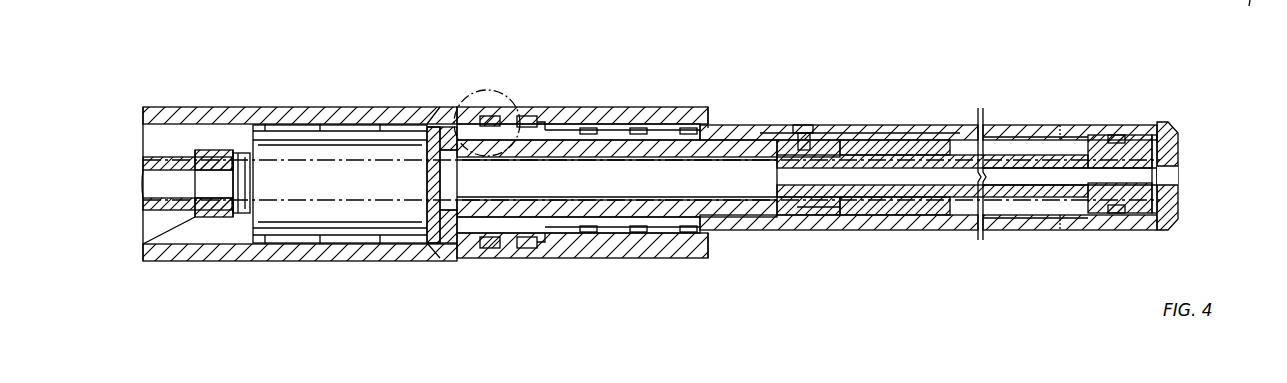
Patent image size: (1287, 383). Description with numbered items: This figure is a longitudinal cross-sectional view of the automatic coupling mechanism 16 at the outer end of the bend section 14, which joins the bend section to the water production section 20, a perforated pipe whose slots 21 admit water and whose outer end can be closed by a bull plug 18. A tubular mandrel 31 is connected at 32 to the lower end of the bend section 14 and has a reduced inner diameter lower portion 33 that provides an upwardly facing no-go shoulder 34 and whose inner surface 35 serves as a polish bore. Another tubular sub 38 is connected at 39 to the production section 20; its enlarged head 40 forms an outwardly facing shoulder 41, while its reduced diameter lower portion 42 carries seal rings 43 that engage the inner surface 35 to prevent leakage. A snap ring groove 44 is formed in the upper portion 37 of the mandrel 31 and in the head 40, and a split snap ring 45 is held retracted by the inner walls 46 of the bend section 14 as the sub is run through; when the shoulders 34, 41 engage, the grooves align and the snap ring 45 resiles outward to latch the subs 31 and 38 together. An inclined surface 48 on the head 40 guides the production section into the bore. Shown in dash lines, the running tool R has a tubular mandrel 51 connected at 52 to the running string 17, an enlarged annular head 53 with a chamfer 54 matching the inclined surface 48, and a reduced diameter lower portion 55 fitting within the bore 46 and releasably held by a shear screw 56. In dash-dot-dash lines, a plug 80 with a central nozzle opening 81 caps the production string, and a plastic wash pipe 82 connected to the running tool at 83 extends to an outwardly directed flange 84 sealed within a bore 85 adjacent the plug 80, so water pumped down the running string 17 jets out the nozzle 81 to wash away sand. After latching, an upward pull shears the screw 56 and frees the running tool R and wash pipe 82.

The bend section 14 is at (218, 254).
The coupling mechanism 16 is at (229, 94).
The running string 17 is at (167, 177).
The bull plug 18 is at (1248, 13).
The water production section 20 is at (1003, 229).
The perforations or slots 21 is at (1032, 124).
The tubular mandrel 31 is at (410, 250).
The connection 32 is at (322, 106).
The reduced inner diameter lower portion 33 is at (668, 250).
The stop or no-go shoulder 34 is at (547, 242).
The inner surface 35 is at (560, 234).
The upper portion 37 is at (427, 122).
The tubular sub 38 is at (782, 122).
The connection 39 is at (753, 125).
The head 40 is at (470, 235).
The outwardly facing shoulder 41 is at (557, 135).
The reduced diameter lower portion 42 is at (607, 135).
The seal rings 43 is at (642, 130).
The annular recess or groove 44 is at (495, 240).
The split snap ring 45 is at (492, 116).
The inner walls / bore 46 is at (186, 242).
The inclined surface 48 is at (440, 137).
The tubular mandrel 51 is at (742, 200).
The connection 52 is at (198, 208).
The annular head 53 is at (362, 220).
The chamfer 54 is at (437, 229).
The reduced diameter lower portion 55 is at (707, 107).
The shear screw 56 is at (807, 125).
The plug 80 is at (1160, 123).
The nozzle opening 81 is at (1176, 176).
The wash pipe 82 is at (900, 197).
The connection 83 is at (823, 215).
The outwardly directed flange 84 is at (1105, 207).
The bore 85 is at (1103, 137).
The running tool R is at (310, 217).